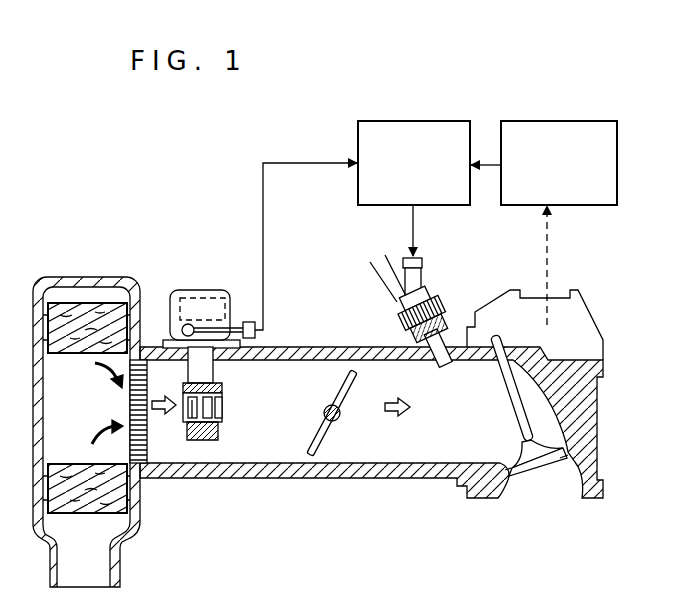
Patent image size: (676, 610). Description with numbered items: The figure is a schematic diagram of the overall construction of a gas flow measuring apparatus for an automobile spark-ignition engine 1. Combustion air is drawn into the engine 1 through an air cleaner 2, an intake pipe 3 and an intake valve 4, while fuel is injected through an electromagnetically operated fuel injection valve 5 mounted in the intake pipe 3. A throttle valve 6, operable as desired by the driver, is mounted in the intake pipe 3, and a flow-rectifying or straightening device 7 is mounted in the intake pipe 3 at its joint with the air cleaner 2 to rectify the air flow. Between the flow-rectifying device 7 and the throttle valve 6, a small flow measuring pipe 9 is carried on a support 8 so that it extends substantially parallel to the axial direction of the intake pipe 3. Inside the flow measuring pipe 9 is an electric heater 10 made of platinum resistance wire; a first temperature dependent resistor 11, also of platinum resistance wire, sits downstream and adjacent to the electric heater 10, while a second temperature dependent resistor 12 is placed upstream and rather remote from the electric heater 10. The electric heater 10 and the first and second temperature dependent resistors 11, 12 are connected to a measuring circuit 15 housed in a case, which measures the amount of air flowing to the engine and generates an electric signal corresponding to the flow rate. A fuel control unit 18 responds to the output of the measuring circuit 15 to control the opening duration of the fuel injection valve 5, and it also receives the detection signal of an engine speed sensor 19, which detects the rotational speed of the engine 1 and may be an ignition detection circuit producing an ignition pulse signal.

The engine 1 is at (597, 431).
The air cleaner 2 is at (49, 494).
The intake pipe 3 is at (325, 479).
The intake valve 4 is at (551, 499).
The electromagnetically operated fuel injection valve 5 is at (441, 322).
The throttle valve 6 is at (342, 393).
The flow-rectifying device 7 is at (149, 372).
The support 8 is at (215, 372).
The flow measuring pipe 9 is at (215, 392).
The electric heater 10 is at (218, 420).
The first temperature dependent resistor 11 is at (222, 413).
The second temperature dependent resistor 12 is at (190, 412).
The measuring circuit 15 is at (201, 298).
The fuel control unit 18 is at (437, 121).
The engine speed sensor 19 is at (569, 121).